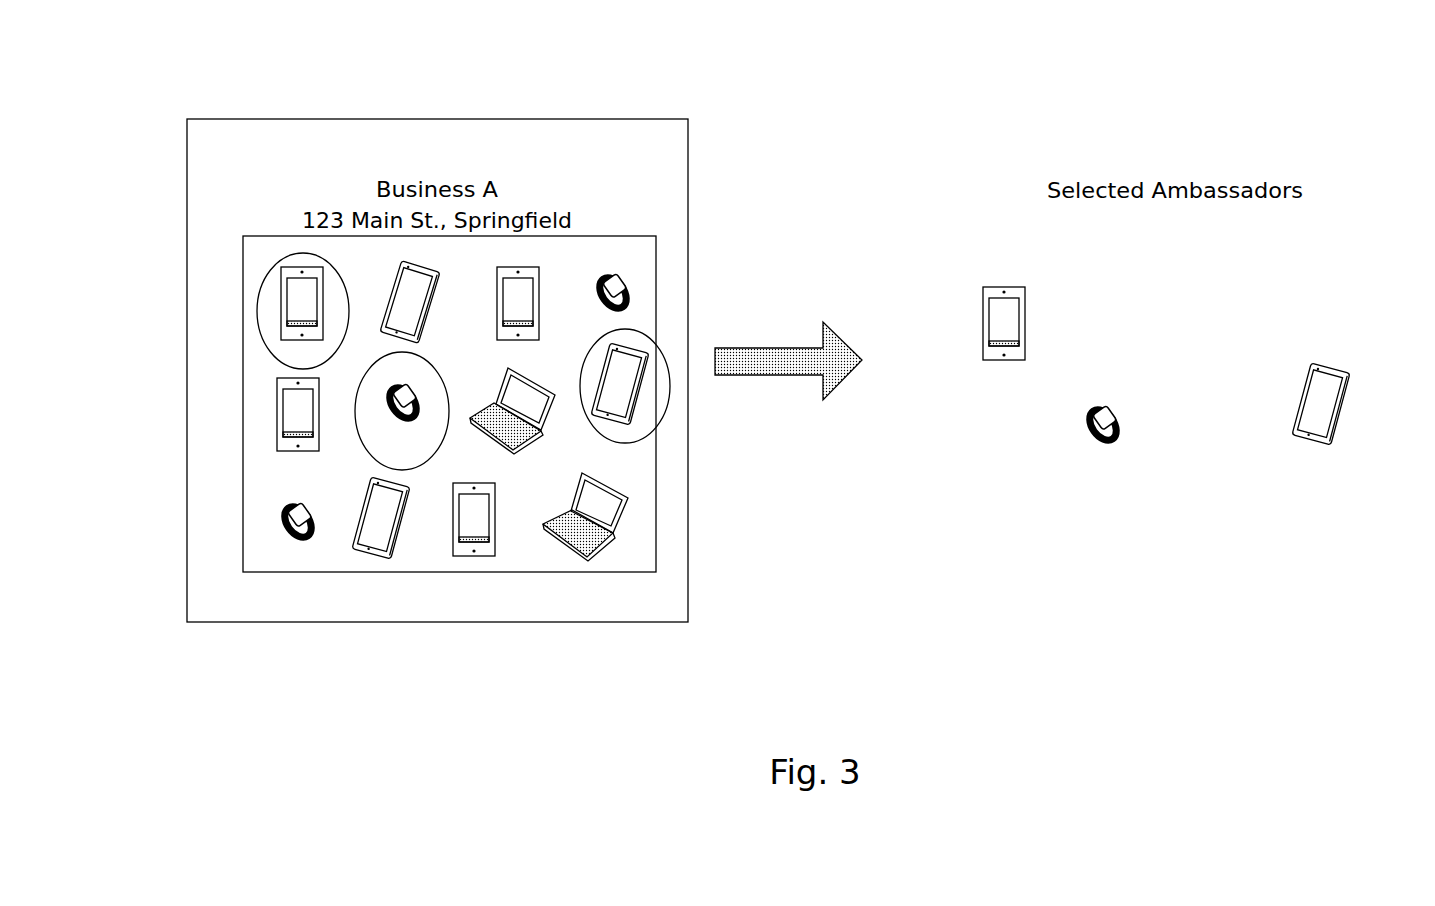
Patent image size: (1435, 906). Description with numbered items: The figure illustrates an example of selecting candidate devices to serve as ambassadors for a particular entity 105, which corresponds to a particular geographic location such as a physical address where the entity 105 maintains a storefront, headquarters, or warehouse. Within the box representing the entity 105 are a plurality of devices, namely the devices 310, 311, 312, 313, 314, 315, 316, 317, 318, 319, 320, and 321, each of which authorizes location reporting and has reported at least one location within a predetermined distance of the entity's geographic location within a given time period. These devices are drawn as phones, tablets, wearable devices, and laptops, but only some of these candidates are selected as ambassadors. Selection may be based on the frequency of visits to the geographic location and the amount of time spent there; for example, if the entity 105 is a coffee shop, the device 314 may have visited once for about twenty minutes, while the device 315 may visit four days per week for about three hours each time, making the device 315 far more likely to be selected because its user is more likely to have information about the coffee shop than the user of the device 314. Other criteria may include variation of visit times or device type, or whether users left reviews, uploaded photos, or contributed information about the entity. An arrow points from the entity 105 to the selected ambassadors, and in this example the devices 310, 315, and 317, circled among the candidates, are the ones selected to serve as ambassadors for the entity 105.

The entity 105 is at (340, 119).
The device 310 is at (283, 300).
The device 311 is at (398, 285).
The device 312 is at (502, 287).
The device 313 is at (620, 268).
The device 314 is at (277, 380).
The device 315 is at (385, 403).
The device 316 is at (532, 443).
The device 317 is at (637, 395).
The device 318 is at (282, 503).
The device 319 is at (368, 552).
The device 320 is at (473, 553).
The device 321 is at (574, 552).